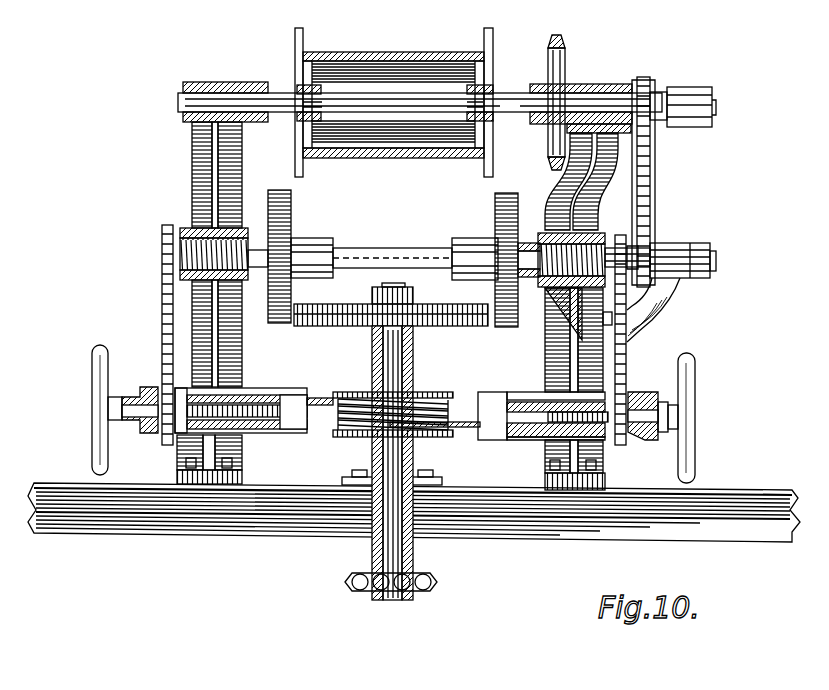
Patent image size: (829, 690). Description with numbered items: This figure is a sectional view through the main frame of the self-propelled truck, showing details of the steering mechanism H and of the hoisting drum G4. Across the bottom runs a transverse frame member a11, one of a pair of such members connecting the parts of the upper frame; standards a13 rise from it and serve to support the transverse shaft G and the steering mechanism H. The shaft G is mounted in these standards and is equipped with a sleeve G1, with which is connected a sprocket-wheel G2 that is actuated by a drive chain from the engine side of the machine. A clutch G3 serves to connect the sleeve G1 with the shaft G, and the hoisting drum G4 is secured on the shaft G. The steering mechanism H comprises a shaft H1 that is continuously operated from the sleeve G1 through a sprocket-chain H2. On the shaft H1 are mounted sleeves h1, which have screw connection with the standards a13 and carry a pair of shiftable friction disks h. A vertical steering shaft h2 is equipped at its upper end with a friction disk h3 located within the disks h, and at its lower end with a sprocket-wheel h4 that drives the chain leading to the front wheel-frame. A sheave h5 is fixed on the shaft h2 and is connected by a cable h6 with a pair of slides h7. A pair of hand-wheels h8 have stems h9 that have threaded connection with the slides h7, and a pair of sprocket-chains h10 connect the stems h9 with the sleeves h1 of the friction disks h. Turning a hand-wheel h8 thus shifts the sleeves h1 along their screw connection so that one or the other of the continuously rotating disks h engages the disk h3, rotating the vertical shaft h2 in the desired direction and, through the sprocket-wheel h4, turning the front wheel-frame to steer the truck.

The transverse frame member a11 is at (158, 527).
The standards a13 is at (192, 195).
The transverse shaft G is at (500, 96).
The sleeve G1 is at (605, 84).
The sprocket-wheel G2 is at (562, 50).
The clutch G3 is at (697, 92).
The hoisting drum G4 is at (448, 50).
The steering mechanism H is at (669, 310).
The shaft H1 is at (716, 268).
The sprocket-chain H2 is at (650, 203).
The shiftable friction disks h is at (266, 230).
The sleeves h1 is at (527, 244).
The vertical steering shaft h2 is at (378, 528).
The friction disk h3 is at (435, 330).
The sprocket-wheel h4 is at (437, 582).
The sheave h5 is at (343, 392).
The cable h6 is at (465, 432).
The slides h7 is at (290, 392).
The hand-wheels h8 is at (92, 362).
The stems h9 is at (140, 432).
The sprocket-chains h10 is at (163, 350).